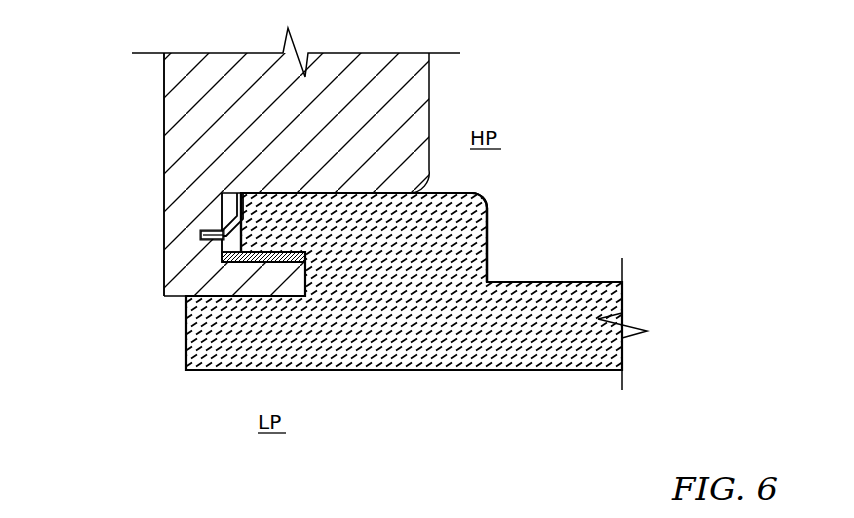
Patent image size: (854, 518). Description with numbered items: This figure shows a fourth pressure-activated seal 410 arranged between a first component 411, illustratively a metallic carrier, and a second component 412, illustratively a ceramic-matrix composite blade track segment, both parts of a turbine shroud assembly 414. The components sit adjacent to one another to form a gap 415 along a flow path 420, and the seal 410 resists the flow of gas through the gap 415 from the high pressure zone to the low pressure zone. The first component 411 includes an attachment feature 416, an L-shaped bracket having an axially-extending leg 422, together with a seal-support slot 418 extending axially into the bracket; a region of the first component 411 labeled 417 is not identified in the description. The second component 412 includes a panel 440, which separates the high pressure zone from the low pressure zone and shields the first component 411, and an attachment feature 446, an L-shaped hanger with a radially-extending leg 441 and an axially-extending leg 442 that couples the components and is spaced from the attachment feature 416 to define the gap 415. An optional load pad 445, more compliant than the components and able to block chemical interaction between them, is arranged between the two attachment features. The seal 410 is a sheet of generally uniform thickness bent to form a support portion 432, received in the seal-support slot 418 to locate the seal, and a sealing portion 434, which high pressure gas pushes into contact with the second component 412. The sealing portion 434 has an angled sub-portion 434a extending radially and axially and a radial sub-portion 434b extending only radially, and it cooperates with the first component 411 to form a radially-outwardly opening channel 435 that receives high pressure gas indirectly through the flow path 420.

The pressure-activated seal 410 is at (105, 314).
The first component 411 is at (163, 81).
The second component 412 is at (457, 378).
The turbine shroud assembly 414 is at (579, 96).
The gap 415 is at (218, 204).
The attachment feature 416 is at (163, 162).
The body of first component 417 is at (405, 95).
The seal-support slot 418 is at (207, 230).
The flow path 420 is at (432, 186).
The axially-extending leg 422 is at (244, 273).
The support portion 432 is at (207, 243).
The sealing portion 434 is at (233, 241).
The angled sub-portion 434a is at (236, 230).
The radial sub-portion 434b is at (256, 192).
The radially-outwardly opening channel 435 is at (230, 191).
The panel 440 is at (335, 347).
The radially-extending leg 441 is at (448, 268).
The axially-extending leg 442 is at (335, 192).
The load pad 445 is at (292, 251).
The attachment feature 446 is at (492, 228).